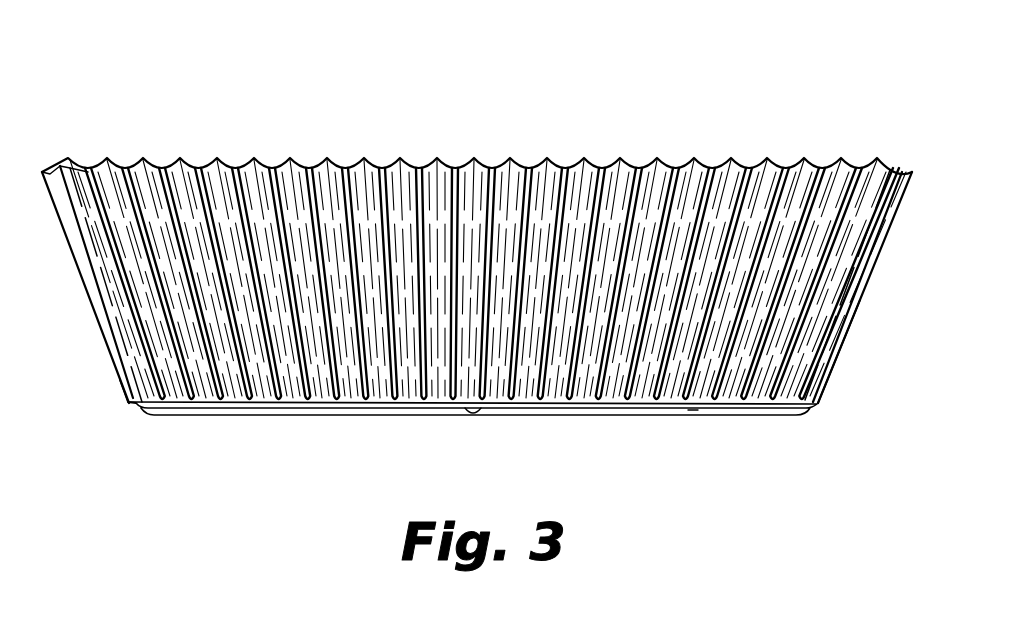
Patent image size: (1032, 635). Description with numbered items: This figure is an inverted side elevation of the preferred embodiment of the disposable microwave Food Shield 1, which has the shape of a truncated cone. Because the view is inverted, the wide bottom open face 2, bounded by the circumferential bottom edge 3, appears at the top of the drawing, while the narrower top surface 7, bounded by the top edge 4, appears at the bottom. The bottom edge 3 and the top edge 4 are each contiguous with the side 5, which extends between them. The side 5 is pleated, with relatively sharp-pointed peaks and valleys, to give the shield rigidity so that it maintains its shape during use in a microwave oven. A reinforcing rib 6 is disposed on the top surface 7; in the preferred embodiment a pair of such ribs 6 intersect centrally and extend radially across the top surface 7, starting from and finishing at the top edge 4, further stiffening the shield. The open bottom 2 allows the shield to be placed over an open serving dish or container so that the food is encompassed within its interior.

The Food Shield 1 is at (665, 100).
The bottom open face 2 is at (273, 138).
The circumferential bottom edge 3 is at (458, 168).
The top edge 4 is at (128, 403).
The side 5 is at (845, 340).
The reinforcing rib 6 is at (473, 414).
The top surface 7 is at (224, 409).